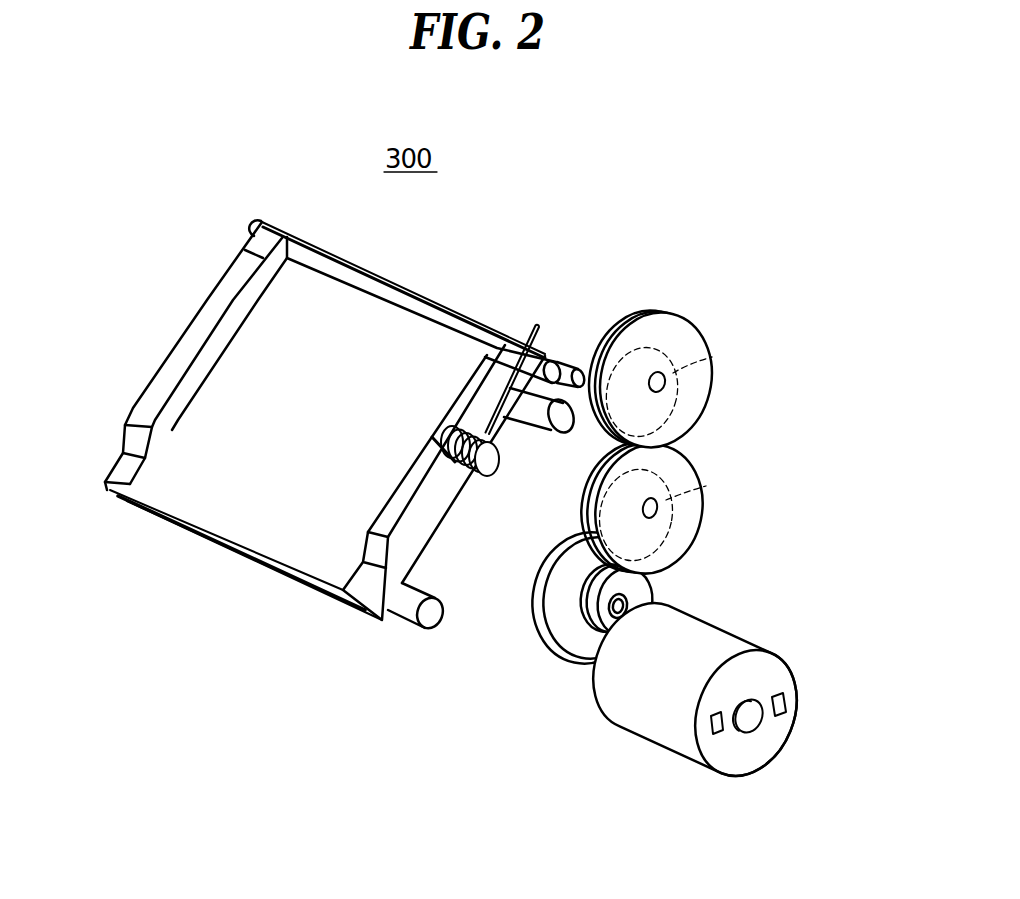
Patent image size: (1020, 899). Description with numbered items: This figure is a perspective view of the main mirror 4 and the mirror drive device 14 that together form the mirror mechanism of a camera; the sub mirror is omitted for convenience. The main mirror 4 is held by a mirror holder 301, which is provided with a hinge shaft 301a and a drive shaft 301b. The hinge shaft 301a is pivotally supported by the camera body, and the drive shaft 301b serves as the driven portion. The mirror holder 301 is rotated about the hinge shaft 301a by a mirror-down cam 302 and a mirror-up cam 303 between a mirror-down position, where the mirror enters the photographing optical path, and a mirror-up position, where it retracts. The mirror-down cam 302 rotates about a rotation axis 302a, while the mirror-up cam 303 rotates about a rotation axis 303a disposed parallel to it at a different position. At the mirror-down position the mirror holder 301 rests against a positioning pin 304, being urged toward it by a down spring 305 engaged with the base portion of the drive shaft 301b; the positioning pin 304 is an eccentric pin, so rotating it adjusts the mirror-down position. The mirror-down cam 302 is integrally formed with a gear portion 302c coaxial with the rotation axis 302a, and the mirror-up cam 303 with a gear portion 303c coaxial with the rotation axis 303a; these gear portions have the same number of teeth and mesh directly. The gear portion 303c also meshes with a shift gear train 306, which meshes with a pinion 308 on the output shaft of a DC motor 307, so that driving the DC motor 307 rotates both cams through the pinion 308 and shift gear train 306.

The mirror drive device 14 is at (757, 230).
The main mirror 4 is at (233, 520).
The mirror holder 301 is at (180, 348).
The hinge shaft 301a is at (256, 226).
The drive shaft 301b is at (650, 508).
The mirror-down cam 302 is at (700, 368).
The rotation axis 302a is at (660, 385).
The gear portion 302c is at (682, 333).
The mirror-up cam 303 is at (698, 507).
The rotation axis 303a is at (650, 508).
The gear portion 303c is at (682, 470).
The positioning pin 304 is at (430, 615).
The down spring 305 is at (490, 466).
The shift gear train 306 is at (646, 592).
The DC motor 307 is at (722, 648).
The pinion 308 is at (593, 660).